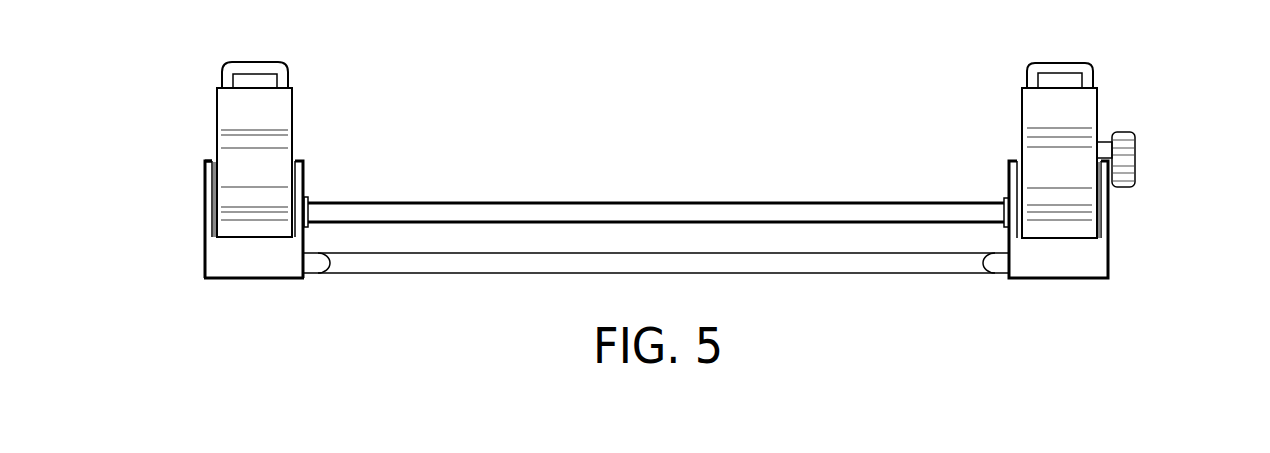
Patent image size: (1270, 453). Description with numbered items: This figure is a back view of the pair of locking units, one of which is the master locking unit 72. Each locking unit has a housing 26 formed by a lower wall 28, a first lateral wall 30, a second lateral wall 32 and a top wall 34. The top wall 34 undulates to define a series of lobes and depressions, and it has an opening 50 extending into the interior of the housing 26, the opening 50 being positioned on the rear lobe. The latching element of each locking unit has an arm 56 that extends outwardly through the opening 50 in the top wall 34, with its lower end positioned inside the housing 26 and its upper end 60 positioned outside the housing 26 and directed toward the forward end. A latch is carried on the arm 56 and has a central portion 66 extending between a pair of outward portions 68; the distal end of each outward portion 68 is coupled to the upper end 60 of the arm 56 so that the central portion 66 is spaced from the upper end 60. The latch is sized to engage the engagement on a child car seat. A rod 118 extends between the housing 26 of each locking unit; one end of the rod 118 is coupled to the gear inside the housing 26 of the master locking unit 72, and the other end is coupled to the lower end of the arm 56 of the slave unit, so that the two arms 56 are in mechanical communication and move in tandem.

The housing 26 is at (249, 215).
The lower wall 28 is at (255, 279).
The first lateral wall 30 is at (205, 224).
The second lateral wall 32 is at (304, 178).
The top wall 34 is at (213, 160).
The opening 50 is at (255, 237).
The arm 56 is at (1057, 137).
The upper end 60 is at (1060, 88).
The central portion 66 is at (1045, 60).
The outward portions 68 is at (1015, 80).
The master locking unit 72 is at (1115, 258).
The rod 118 is at (678, 210).